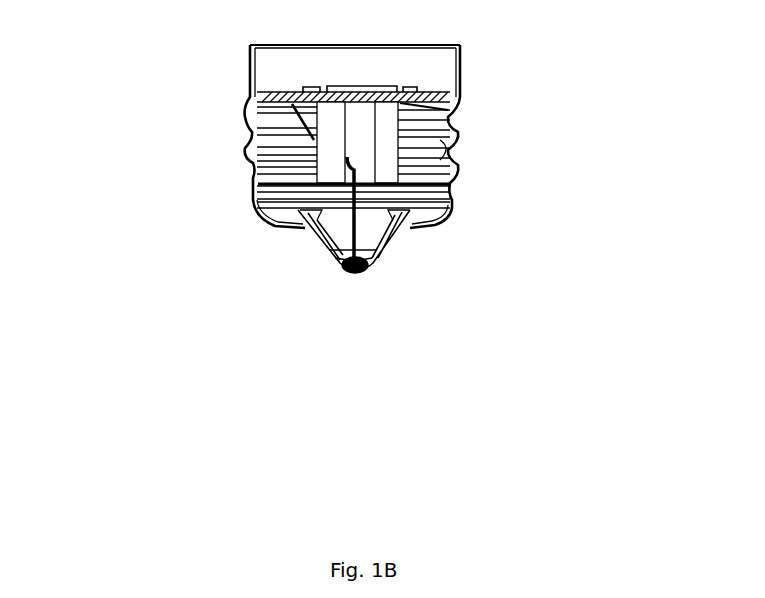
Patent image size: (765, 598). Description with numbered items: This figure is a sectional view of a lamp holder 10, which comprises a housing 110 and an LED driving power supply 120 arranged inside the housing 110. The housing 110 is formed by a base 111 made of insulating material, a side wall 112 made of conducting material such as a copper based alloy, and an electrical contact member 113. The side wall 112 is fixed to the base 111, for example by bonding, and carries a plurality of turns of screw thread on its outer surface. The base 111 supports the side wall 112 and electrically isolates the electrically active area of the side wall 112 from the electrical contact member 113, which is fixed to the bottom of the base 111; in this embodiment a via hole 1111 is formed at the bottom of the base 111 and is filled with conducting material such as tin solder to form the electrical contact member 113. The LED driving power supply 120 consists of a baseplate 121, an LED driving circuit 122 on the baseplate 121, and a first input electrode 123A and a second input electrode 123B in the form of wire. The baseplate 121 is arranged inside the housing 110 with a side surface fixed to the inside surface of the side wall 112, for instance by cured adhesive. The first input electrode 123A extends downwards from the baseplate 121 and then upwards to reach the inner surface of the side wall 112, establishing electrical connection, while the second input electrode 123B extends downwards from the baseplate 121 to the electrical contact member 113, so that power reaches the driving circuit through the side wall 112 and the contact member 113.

The lamp holder 10 is at (512, 465).
The housing 110 is at (236, 212).
The base 111 is at (307, 240).
The via hole 1111 is at (348, 268).
The side wall 112 is at (250, 163).
The electrical contact member 113 is at (365, 270).
The LED driving power supply 120 is at (613, 23).
The baseplate 121 is at (453, 113).
The LED driving circuit 122 is at (363, 88).
The first input electrode 123A is at (457, 153).
The second input electrode 123B is at (357, 227).